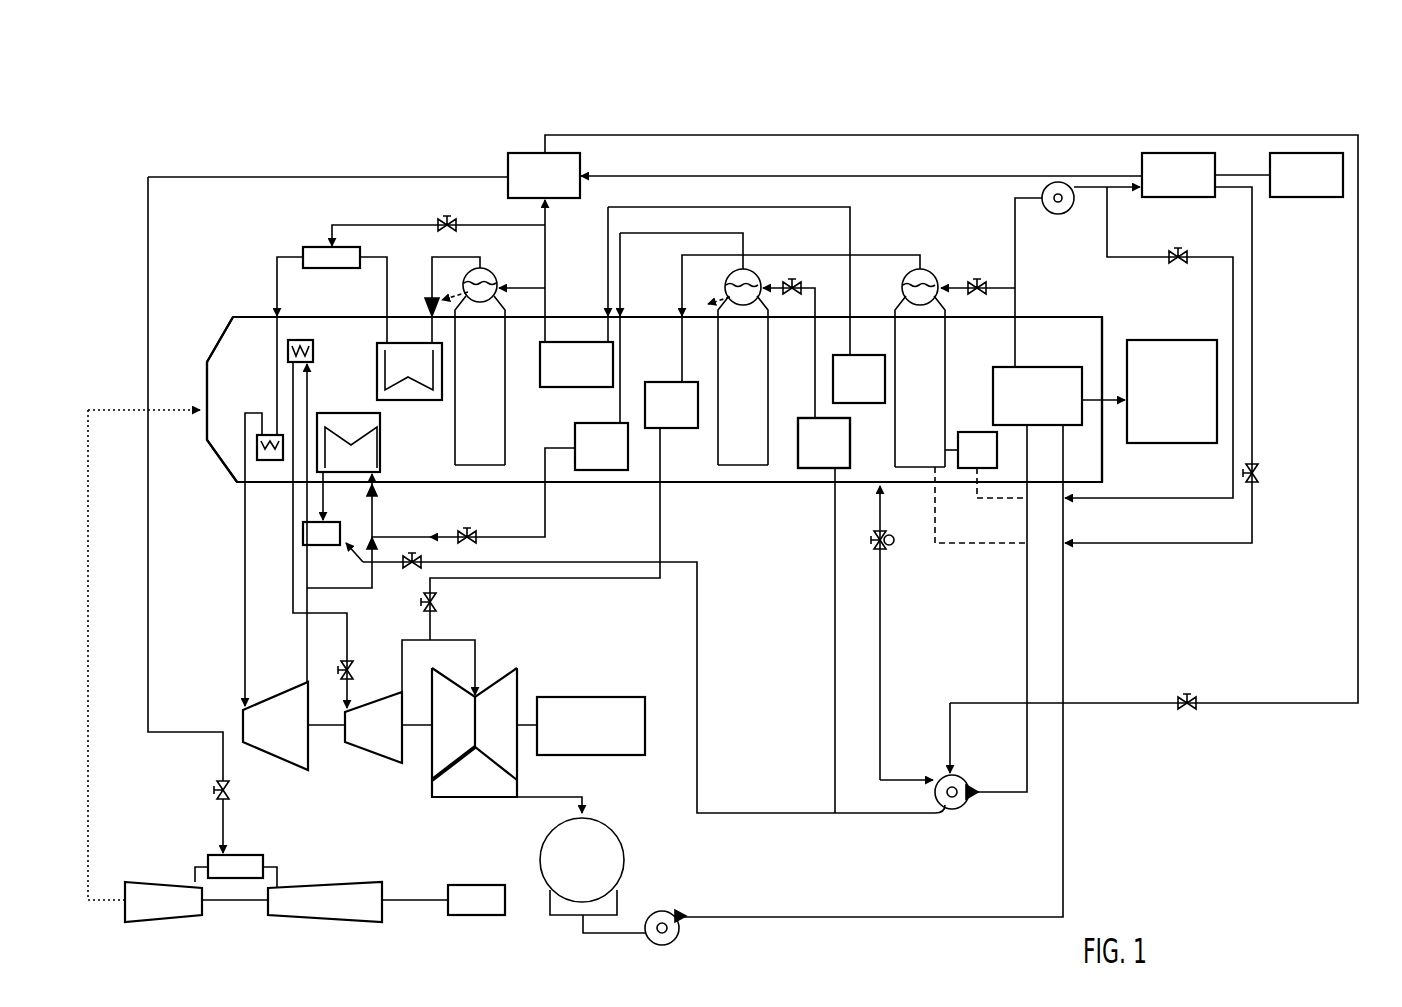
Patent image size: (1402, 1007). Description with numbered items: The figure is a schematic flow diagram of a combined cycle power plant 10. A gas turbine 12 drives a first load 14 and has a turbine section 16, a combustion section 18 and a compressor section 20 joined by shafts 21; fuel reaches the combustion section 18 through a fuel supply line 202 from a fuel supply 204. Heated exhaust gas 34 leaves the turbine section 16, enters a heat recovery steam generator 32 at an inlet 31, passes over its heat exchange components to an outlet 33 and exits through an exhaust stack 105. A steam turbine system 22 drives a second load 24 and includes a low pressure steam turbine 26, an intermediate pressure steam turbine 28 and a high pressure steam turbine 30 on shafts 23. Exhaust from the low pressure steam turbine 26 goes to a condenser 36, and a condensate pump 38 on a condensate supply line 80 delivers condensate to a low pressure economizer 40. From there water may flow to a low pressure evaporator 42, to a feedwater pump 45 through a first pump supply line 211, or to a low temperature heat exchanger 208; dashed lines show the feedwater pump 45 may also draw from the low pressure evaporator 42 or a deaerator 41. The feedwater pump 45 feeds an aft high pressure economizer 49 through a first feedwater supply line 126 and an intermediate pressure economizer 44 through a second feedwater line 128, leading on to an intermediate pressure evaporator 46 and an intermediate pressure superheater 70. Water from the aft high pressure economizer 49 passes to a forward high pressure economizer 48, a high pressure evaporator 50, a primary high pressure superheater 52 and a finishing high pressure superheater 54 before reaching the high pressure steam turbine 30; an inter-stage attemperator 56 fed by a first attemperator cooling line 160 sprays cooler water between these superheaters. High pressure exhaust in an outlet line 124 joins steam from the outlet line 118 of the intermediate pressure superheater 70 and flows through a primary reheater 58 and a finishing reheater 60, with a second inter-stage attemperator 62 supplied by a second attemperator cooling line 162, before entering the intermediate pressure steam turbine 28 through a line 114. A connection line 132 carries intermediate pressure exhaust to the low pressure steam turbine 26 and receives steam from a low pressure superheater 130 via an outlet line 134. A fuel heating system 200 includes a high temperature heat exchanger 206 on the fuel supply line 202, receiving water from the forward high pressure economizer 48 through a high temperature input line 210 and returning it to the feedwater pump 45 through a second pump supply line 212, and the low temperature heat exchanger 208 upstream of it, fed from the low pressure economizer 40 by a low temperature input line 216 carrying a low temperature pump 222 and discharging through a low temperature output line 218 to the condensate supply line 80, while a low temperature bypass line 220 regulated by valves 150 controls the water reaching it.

The combined cycle power plant 10 is at (1282, 88).
The gas turbine 12 is at (325, 895).
The first load 14 is at (490, 885).
The turbine section 16 is at (165, 882).
The combustion section 18 is at (236, 855).
The compressor section 20 is at (332, 882).
The shafts 21 is at (240, 902).
The steam turbine system 22 is at (444, 715).
The shafts 23 is at (528, 722).
The second load 24 is at (600, 697).
The low pressure steam turbine 26 is at (432, 757).
The intermediate pressure steam turbine 28 is at (378, 756).
The high pressure steam turbine 30 is at (280, 762).
The inlet 31 is at (205, 363).
The heat recovery steam generator 32 is at (1053, 317).
The outlet 33 is at (1104, 335).
The exhaust gas 34 is at (90, 815).
The condenser 36 is at (625, 860).
The condensate pump 38 is at (668, 945).
The low pressure economizer 40 is at (993, 372).
The deaerator 41 is at (971, 450).
The low pressure evaporator 42 is at (947, 405).
The intermediate pressure economizer 44 is at (779, 368).
The feedwater pump 45 is at (963, 783).
The intermediate pressure evaporator 46 is at (797, 450).
The forward high pressure economizer 48 is at (576, 297).
The aft high pressure economizer 49 is at (746, 305).
The high pressure evaporator 50 is at (455, 457).
The primary high pressure superheater 52 is at (405, 342).
The finishing high pressure superheater 54 is at (267, 511).
The inter-stage attemperator 56 is at (328, 270).
The primary reheater 58 is at (334, 412).
The finishing reheater 60 is at (315, 348).
The inter-stage attemperator 62 is at (314, 546).
The intermediate pressure superheater 70 is at (659, 351).
The condensate supply line 80 is at (998, 919).
The exhaust stack 105 is at (1172, 391).
The hot reheat steam line 114 is at (349, 641).
The outlet line 118 is at (547, 508).
The outlet line 124 is at (305, 665).
The first feedwater supply line 126 is at (882, 688).
The second feedwater line 128 is at (833, 622).
The low pressure superheater 130 is at (782, 341).
The connection line 132 is at (458, 640).
The outlet line 134 is at (662, 540).
The valves 150 is at (213, 786).
The first attemperator cooling line 160 is at (376, 225).
The second attemperator cooling line 162 is at (698, 677).
The fuel heating system 200 is at (925, 152).
The fuel supply line 202 is at (405, 177).
The fuel supply 204 is at (1306, 175).
The high temperature heat exchanger 206 is at (544, 175).
The low temperature heat exchanger 208 is at (1206, 175).
The high temperature input line 210 is at (547, 272).
The first pump supply line 211 is at (1025, 608).
The second pump supply line 212 is at (765, 135).
The low temperature input line 216 is at (1017, 265).
The low temperature output line 218 is at (1254, 311).
The low temperature bypass line 220 is at (1132, 260).
The low temperature pump 222 is at (1068, 211).